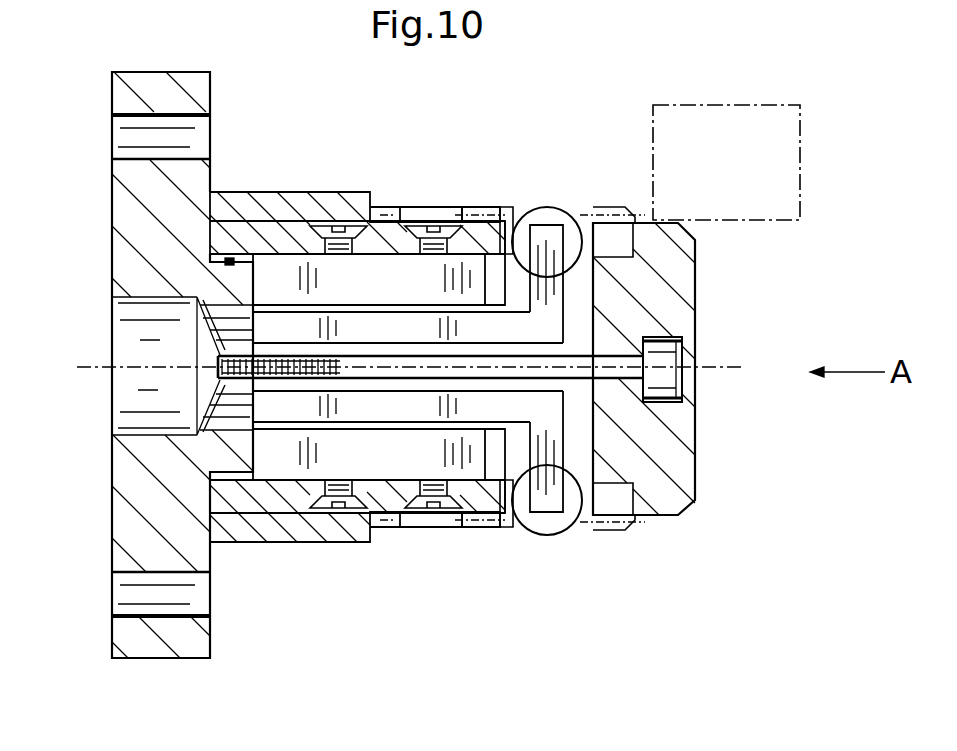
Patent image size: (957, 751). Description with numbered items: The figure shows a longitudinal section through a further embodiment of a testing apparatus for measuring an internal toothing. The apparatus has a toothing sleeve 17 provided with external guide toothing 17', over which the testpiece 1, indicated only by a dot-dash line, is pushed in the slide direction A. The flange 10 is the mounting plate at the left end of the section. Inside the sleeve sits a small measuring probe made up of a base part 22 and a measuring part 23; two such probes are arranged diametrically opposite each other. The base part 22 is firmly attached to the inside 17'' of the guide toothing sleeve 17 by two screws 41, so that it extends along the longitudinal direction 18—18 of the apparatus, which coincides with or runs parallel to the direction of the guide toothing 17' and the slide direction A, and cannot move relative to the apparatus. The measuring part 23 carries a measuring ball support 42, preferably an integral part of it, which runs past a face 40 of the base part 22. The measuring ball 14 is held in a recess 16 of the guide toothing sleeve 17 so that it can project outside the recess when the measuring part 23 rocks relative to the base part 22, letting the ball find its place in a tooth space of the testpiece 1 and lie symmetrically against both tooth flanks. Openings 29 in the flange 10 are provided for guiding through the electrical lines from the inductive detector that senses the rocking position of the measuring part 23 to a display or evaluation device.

The testpiece 1 is at (730, 105).
The flange / mounting plate 10 is at (128, 100).
The measuring ball 14 is at (549, 218).
The recess 16 is at (505, 240).
The toothing sleeve 17 is at (370, 331).
The external guide toothing 17' is at (480, 328).
The inside of the guide toothing sleeve 17'' is at (142, 259).
The longitudinal direction 18 is at (410, 369).
The base part 22 is at (378, 282).
The measuring part 23 is at (310, 330).
The openings 29 is at (218, 318).
The face 40 is at (565, 283).
The screws 41 is at (332, 232).
The measuring ball support 42 is at (545, 313).